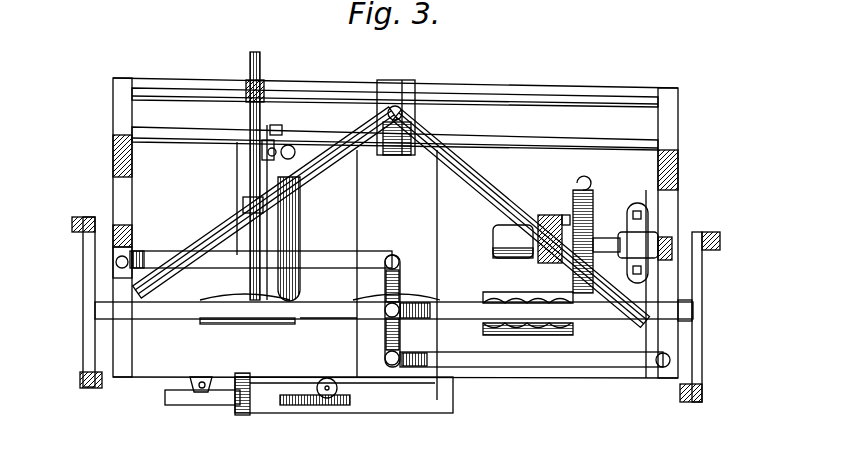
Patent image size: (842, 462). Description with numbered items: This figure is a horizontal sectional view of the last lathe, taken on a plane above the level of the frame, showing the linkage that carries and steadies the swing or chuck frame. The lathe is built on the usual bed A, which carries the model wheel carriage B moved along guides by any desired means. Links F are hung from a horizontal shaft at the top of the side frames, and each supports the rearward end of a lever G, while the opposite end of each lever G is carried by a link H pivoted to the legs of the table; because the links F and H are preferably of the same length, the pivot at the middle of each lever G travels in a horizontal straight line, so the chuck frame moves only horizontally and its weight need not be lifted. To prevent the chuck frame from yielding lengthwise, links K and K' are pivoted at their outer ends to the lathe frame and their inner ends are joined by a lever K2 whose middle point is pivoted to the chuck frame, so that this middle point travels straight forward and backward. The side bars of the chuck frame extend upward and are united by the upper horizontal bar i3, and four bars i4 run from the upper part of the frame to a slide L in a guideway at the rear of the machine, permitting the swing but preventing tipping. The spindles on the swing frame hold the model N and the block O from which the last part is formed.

The bed A is at (395, 233).
The slide L is at (392, 80).
The bars i4 is at (472, 182).
The link K is at (252, 244).
The lever K2 is at (402, 284).
The link K' is at (535, 382).
The lever G is at (85, 304).
The link F is at (78, 218).
The link H is at (95, 388).
The model wheel carriage B is at (300, 232).
The model N is at (262, 326).
The upper horizontal bar i3 is at (330, 320).
The block O is at (510, 292).